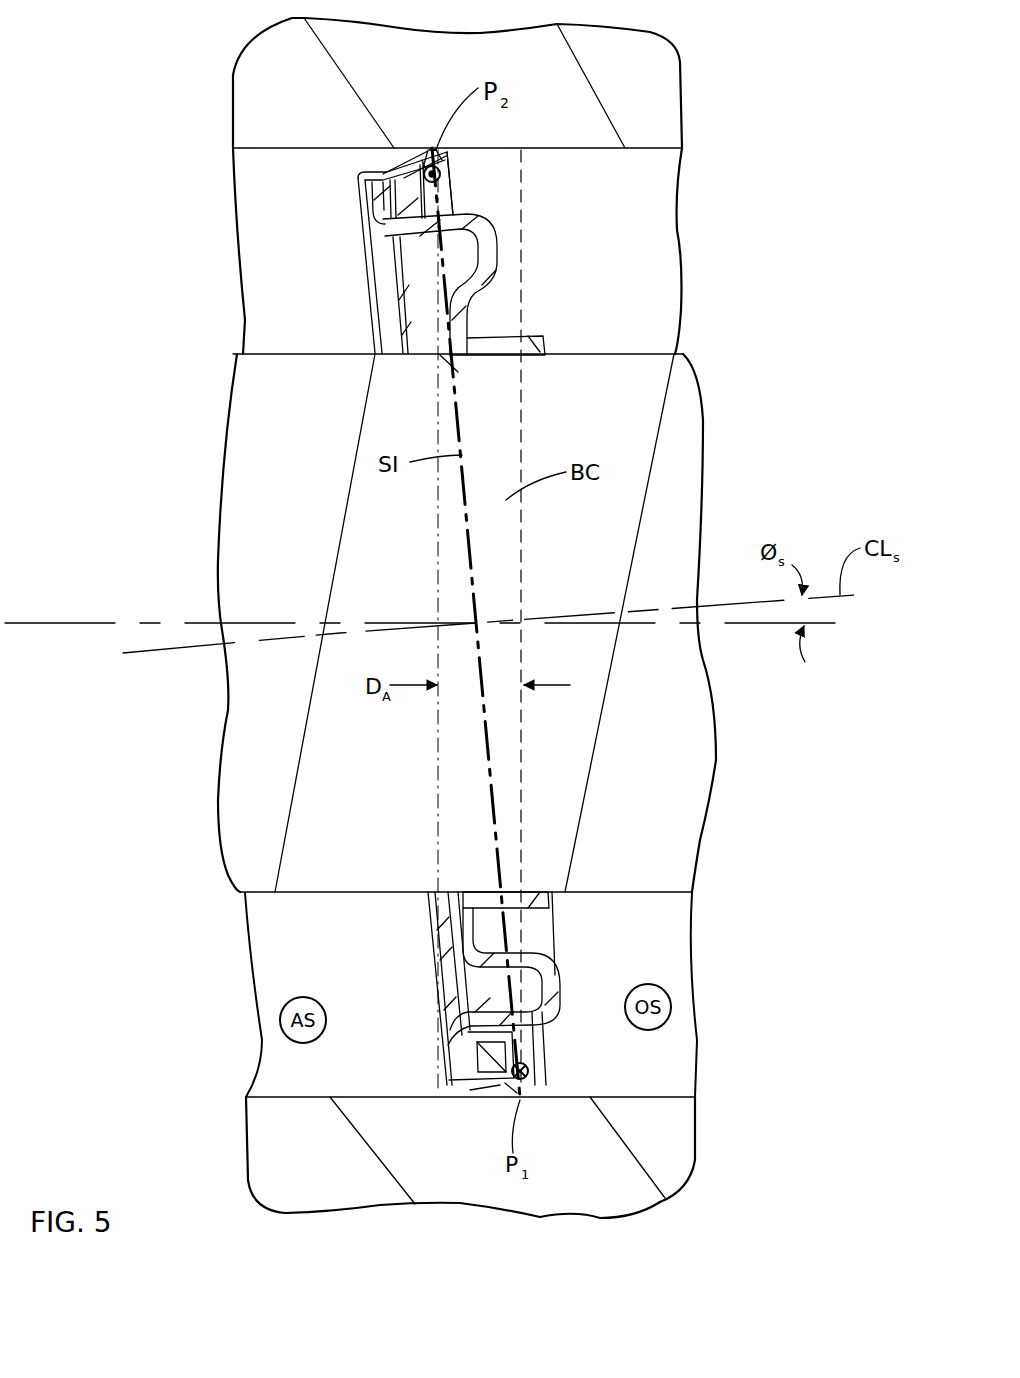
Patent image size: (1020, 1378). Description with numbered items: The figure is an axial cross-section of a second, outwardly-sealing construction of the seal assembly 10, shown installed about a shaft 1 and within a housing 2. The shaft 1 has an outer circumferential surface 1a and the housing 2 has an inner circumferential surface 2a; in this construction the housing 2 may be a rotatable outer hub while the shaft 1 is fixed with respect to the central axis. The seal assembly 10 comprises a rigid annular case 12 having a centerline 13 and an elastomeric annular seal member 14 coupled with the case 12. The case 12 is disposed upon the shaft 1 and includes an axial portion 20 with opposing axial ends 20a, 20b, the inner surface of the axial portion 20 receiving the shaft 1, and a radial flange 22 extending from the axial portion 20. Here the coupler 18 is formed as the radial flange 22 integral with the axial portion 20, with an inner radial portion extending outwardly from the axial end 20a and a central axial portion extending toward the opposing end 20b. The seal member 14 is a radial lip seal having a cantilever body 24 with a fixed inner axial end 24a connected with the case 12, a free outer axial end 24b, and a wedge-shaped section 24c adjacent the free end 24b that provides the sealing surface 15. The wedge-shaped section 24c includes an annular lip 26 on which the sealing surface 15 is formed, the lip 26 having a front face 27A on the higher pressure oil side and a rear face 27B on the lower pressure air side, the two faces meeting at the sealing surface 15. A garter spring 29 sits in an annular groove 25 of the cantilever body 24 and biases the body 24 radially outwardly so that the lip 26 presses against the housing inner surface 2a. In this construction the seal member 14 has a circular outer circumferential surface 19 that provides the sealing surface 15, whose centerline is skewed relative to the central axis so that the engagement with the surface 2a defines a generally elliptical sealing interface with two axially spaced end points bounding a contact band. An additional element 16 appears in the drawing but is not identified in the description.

The shaft 1 is at (238, 392).
The outer circumferential surface 1a is at (300, 893).
The housing 2 is at (233, 90).
The inner circumferential surface 2a is at (655, 240).
The seal assembly 10 is at (580, 218).
The annular case 12 is at (535, 375).
The centerline 13 is at (838, 625).
The annular seal member 14 is at (389, 130).
The sealing surface 15 is at (528, 1100).
The seal case / carrier 16 is at (362, 253).
The coupler 18 is at (400, 283).
The circular outer circumferential surface 19 is at (433, 145).
The axial portion 20 is at (532, 330).
The axial end 20a is at (468, 357).
The opposing axial end 20b is at (551, 346).
The radial flange 22 is at (502, 253).
The cantilever body 24 is at (400, 165).
The fixed inner axial end 24a is at (440, 1062).
The free outer axial end 24b is at (542, 1080).
The wedge-shaped section 24c is at (505, 1082).
The annular groove 25 is at (512, 1070).
The annular lip 26 is at (517, 1092).
The front face 27A is at (440, 150).
The rear face 27B is at (424, 163).
The garter spring 29 is at (445, 176).